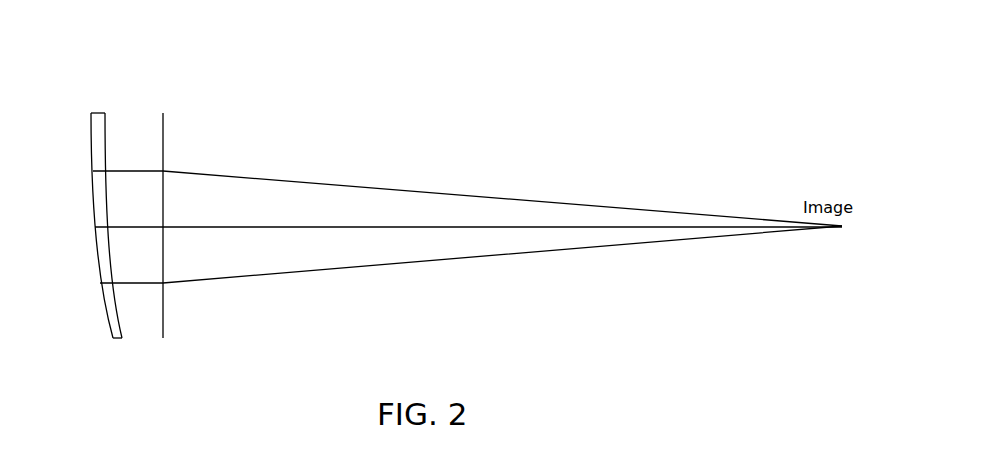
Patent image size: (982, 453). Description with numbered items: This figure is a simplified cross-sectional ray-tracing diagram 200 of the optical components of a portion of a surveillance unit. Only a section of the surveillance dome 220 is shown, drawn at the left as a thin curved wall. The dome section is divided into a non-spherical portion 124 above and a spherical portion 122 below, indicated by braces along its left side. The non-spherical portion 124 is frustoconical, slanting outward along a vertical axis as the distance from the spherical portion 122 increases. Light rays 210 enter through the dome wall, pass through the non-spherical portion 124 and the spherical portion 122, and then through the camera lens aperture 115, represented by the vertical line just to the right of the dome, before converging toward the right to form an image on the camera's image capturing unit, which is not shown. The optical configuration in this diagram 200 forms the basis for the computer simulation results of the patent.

The simplified cross-sectional diagram 200 is at (704, 56).
The camera lens aperture 115 is at (163, 127).
The non-spherical portion 124 is at (68, 113).
The spherical portion 122 is at (68, 232).
The light rays 210 is at (310, 183).
The surveillance dome 220 is at (122, 338).